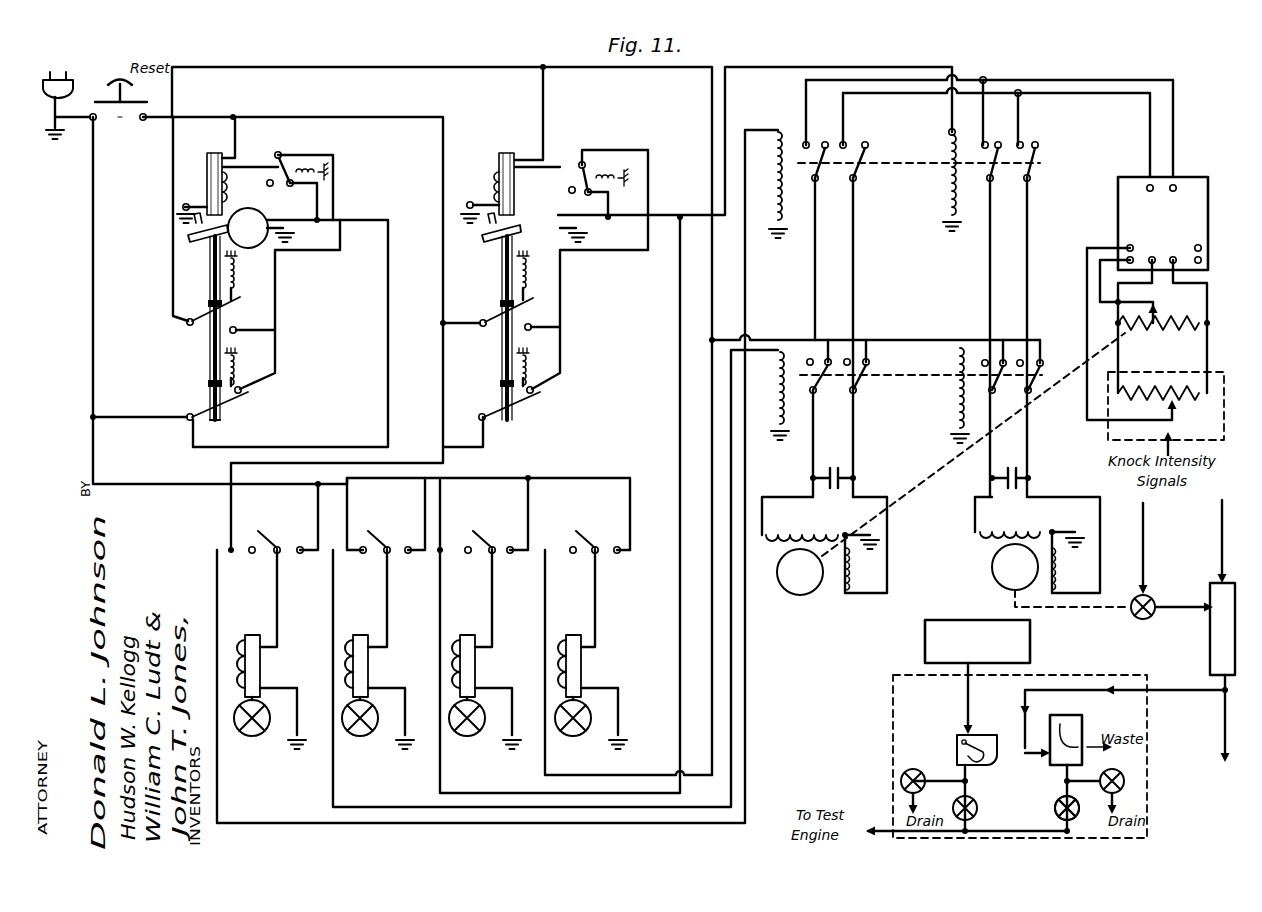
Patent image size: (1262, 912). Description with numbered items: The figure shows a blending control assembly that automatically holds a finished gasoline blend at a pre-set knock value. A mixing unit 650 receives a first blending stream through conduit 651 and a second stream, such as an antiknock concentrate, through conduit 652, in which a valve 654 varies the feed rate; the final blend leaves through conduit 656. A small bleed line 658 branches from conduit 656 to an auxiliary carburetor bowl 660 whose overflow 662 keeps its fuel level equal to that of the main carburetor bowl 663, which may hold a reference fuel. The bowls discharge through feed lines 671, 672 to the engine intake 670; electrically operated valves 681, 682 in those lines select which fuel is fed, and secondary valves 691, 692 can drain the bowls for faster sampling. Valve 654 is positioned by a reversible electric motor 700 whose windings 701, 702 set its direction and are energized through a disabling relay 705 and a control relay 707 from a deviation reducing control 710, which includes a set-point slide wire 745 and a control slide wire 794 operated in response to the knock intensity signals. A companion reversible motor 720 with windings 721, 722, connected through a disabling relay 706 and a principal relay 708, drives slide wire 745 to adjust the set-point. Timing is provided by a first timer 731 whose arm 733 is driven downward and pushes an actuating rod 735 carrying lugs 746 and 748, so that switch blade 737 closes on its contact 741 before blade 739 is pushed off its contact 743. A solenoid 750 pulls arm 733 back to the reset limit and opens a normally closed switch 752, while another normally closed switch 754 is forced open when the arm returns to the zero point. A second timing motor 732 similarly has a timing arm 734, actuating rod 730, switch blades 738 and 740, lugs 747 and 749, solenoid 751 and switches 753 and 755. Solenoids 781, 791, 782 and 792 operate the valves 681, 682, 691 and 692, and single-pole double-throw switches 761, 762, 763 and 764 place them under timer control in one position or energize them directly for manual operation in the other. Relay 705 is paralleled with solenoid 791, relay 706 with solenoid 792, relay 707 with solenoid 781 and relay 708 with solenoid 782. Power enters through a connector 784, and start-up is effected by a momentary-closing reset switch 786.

The connector 784 is at (50, 89).
The reset switch 786 is at (122, 120).
The solenoid 750 is at (212, 153).
The switch 752 is at (276, 155).
The switch 754 is at (186, 204).
The first timer 731 is at (266, 220).
The arm 733 is at (196, 242).
The actuating rod 735 is at (224, 283).
The lug 746 is at (208, 304).
The contact 741 is at (234, 327).
The switch blade 737 is at (208, 332).
The contact 743 is at (237, 384).
The lug 748 is at (206, 385).
The switch blade 739 is at (222, 412).
The solenoid 751 is at (506, 153).
The switch 753 is at (576, 162).
The switch 755 is at (470, 202).
The second timing motor 732 is at (578, 172).
The timing arm 734 is at (488, 244).
The actuating rod 730 is at (505, 285).
The lug 747 is at (500, 304).
The switch blade 738 is at (508, 345).
The lug 749 is at (500, 385).
The switch blade 740 is at (498, 418).
The principal relay 708 is at (792, 110).
The control relay 707 is at (945, 125).
The disabling relay 706 is at (765, 445).
The disabling relay 705 is at (975, 335).
The deviation reducing control 710 is at (1118, 190).
The set-point slide wire 745 is at (1177, 323).
The control slide wire 794 is at (1155, 385).
The winding 721 is at (800, 524).
The winding 722 is at (849, 572).
The companion reversible motor 720 is at (808, 597).
The winding 701 is at (1010, 531).
The winding 702 is at (1057, 572).
The electric motor 700 is at (993, 578).
The conduit 651 is at (1222, 520).
The conduit 652 is at (1145, 550).
The valve 654 is at (1152, 596).
The mixing unit 650 is at (1210, 640).
The bleed line 658 is at (1165, 690).
The conduit 656 is at (1222, 730).
The overflow 662 is at (1090, 700).
The auxiliary carburetor bowl 660 is at (1083, 735).
The main carburetor bowl 663 is at (998, 764).
The secondary valve 692 is at (916, 769).
The electrically operated valve 682 is at (972, 812).
The feed line 672 is at (972, 826).
The feed line 671 is at (1066, 796).
The engine intake 670 is at (1060, 814).
The secondary valve 691 is at (1125, 768).
The electrically operated valve 681 is at (1078, 812).
The switch 761 is at (270, 538).
The switch 762 is at (380, 538).
The switch 763 is at (482, 538).
The switch 764 is at (590, 538).
The solenoid 782 is at (245, 636).
The solenoid 792 is at (353, 636).
The solenoid 781 is at (460, 636).
The solenoid 791 is at (566, 636).